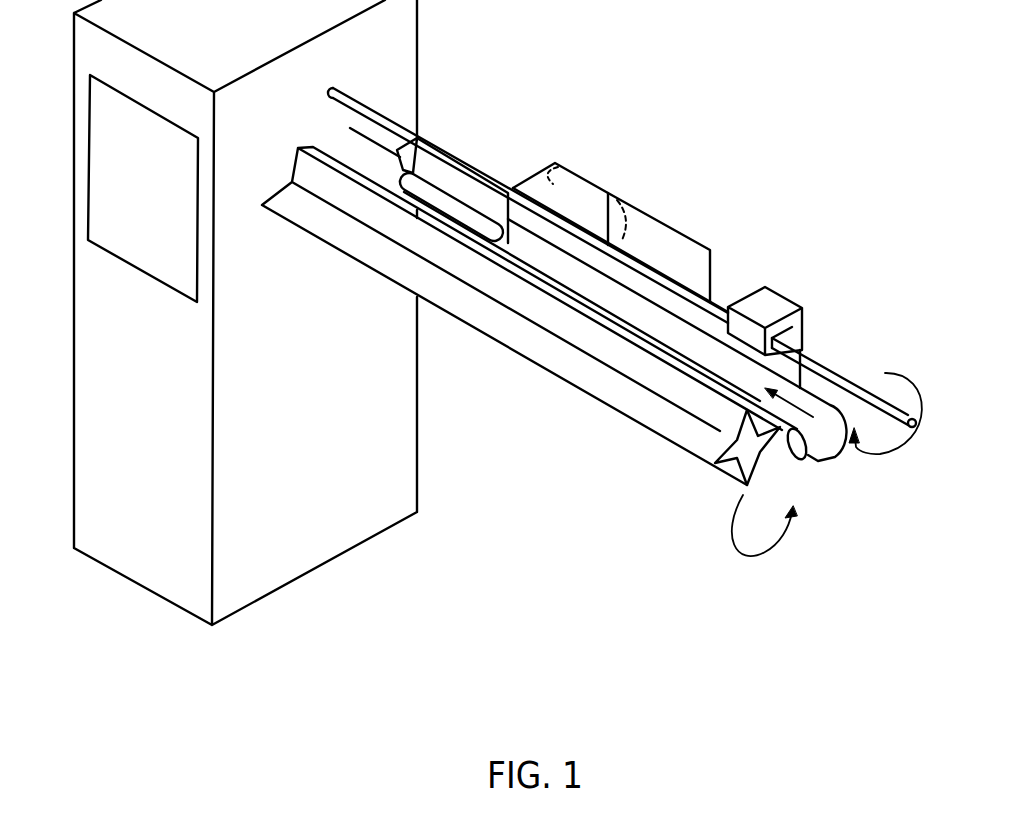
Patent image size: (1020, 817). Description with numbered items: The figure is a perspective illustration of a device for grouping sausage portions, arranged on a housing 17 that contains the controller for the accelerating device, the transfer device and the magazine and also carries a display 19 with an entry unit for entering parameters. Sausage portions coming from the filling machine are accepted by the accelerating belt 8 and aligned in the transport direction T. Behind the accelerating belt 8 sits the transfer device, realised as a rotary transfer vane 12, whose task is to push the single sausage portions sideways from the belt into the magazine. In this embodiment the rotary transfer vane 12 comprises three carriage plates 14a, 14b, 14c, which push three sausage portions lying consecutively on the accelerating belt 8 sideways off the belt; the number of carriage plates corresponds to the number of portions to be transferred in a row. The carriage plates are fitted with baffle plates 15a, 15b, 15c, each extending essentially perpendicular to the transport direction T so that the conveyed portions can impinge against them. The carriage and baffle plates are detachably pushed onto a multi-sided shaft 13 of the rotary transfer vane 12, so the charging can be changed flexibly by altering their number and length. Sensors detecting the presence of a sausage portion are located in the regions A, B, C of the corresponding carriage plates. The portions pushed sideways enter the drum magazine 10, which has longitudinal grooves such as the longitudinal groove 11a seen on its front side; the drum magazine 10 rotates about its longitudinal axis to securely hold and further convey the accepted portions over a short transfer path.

The accelerating belt 8 is at (820, 433).
The drum magazine 10 is at (672, 444).
The longitudinal groove 11a is at (522, 320).
The rotary transfer vane 12 is at (735, 300).
The shaft 13 is at (862, 394).
The carriage plate 14a is at (477, 182).
The carriage plate 14b is at (595, 192).
The carriage plate 14c is at (678, 237).
The baffle plate 15a is at (410, 150).
The baffle plate 15b is at (548, 180).
The baffle plate 15c is at (642, 212).
The housing 17 is at (87, 413).
The display 19 is at (98, 180).
The transport direction T is at (797, 405).
The region of carriage plate A is at (568, 28).
The region of carriage plate B is at (649, 73).
The region of carriage plate C is at (733, 121).